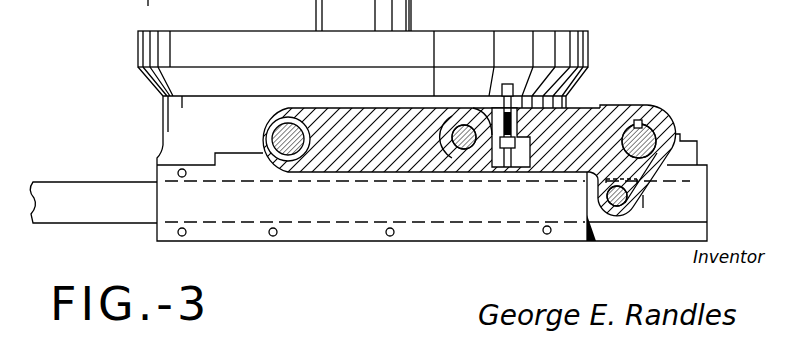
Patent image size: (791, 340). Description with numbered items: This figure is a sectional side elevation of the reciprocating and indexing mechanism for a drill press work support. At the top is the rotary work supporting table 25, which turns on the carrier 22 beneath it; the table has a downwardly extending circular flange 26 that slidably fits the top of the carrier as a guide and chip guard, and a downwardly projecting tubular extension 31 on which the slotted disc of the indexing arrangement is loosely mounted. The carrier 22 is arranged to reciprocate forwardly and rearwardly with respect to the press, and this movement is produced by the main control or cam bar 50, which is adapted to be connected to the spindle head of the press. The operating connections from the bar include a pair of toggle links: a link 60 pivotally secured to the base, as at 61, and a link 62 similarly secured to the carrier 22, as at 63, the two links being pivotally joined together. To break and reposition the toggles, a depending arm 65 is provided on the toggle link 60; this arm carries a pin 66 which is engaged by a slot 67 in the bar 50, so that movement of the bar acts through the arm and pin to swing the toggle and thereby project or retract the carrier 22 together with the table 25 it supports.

The carrier 22 is at (182, 123).
The work supporting table 25 is at (363, 49).
The circular flange 26 is at (168, 80).
The tubular extension 31 is at (332, 10).
The cam bar 50 is at (360, 197).
The toggle link 60 is at (595, 122).
The pivot 61 is at (657, 136).
The toggle link 62 is at (375, 120).
The pivot 63 is at (275, 140).
The depending arm 65 is at (632, 184).
The pin 66 is at (627, 214).
The slot 67 is at (585, 241).